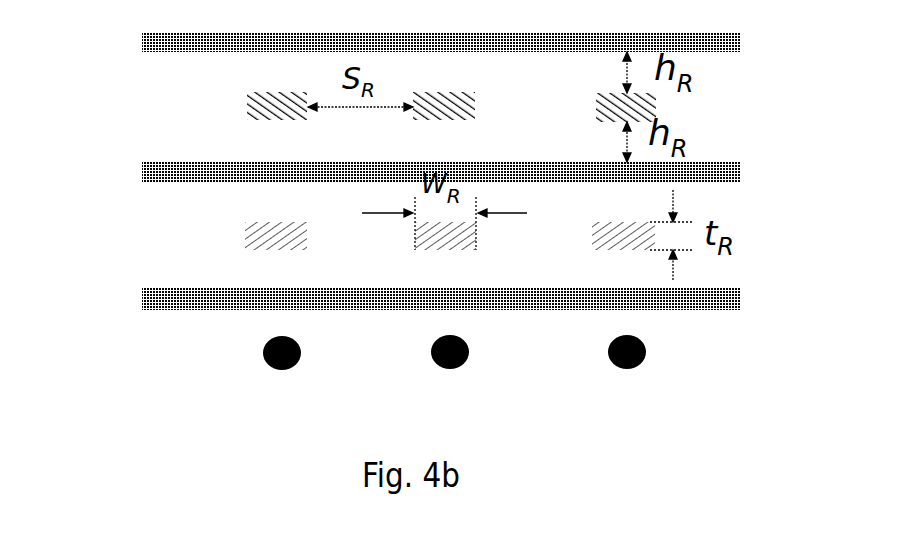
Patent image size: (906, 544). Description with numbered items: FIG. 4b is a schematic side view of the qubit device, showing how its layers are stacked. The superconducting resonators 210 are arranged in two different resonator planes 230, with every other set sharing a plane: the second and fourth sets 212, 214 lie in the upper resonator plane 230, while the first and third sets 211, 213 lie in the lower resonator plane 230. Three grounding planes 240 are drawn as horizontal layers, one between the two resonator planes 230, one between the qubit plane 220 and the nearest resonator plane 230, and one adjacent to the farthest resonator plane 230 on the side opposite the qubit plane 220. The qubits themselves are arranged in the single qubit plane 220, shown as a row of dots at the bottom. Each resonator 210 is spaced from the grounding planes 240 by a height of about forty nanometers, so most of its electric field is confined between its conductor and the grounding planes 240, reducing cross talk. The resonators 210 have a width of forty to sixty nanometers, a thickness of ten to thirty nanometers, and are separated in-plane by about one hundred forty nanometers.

The grounding plane 240 is at (117, 38).
The resonator plane 230 is at (118, 96).
The second set of superconducting resonators 212 is at (213, 94).
The fourth set of superconducting resonators 214 is at (233, 108).
The superconducting resonator 210 is at (596, 104).
The first set of superconducting resonators 211 is at (211, 221).
The third set of superconducting resonators 213 is at (231, 233).
The qubit plane 220 is at (128, 351).